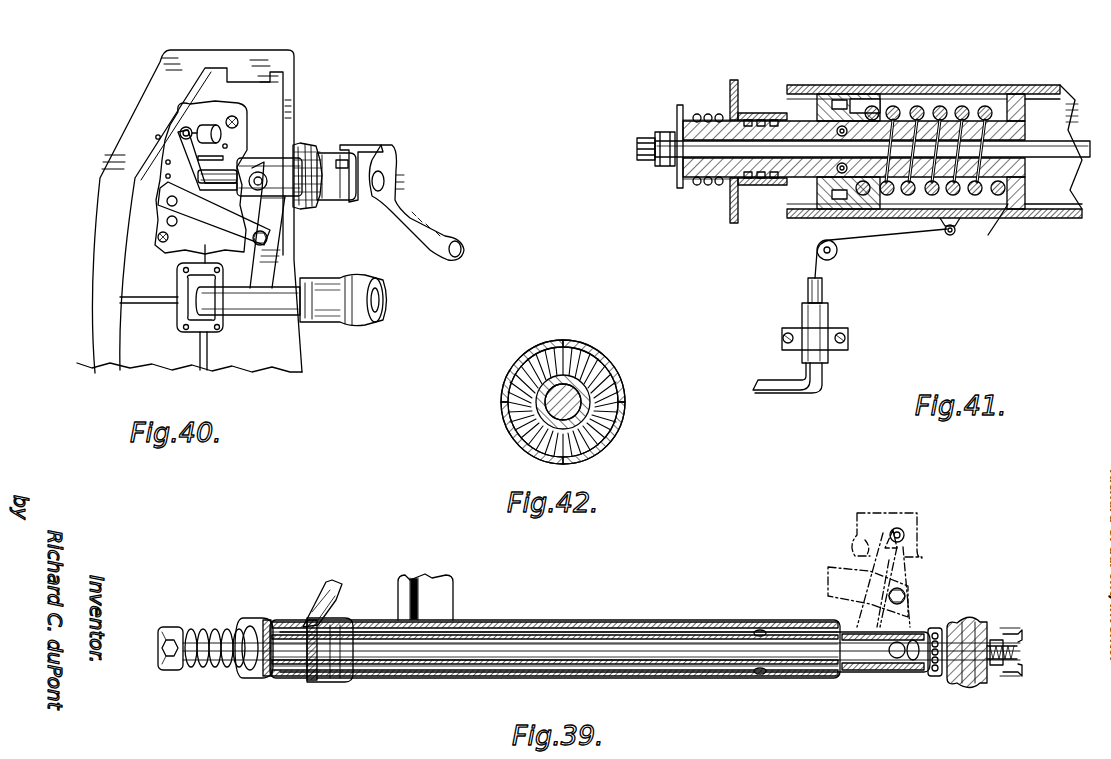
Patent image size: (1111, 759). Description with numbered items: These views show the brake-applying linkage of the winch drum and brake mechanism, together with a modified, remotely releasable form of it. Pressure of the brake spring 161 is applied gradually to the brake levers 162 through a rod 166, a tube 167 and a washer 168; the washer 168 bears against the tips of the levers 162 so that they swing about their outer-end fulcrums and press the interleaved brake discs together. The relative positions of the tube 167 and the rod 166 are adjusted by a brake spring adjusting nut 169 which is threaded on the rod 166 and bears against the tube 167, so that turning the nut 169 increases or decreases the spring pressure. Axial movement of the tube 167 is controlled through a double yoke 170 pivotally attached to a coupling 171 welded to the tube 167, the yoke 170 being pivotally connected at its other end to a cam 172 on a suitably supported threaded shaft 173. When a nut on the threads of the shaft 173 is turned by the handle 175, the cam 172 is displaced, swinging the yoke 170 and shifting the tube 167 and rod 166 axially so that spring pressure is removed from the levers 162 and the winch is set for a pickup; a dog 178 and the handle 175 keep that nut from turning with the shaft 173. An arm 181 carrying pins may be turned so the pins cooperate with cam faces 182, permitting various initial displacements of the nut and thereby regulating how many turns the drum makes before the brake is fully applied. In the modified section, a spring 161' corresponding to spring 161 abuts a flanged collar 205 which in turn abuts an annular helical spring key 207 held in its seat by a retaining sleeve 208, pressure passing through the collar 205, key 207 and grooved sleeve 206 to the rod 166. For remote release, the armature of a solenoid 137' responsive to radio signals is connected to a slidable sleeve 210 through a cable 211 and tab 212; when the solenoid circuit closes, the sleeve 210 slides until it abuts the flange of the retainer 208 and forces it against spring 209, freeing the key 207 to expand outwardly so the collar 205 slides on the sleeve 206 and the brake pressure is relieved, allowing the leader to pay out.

In FIG. 39, the brake spring 161 is at (201, 638).
In FIG. 39, the brake levers 162 is at (320, 598).
In FIG. 41, the rod 166 is at (1090, 140).
In FIG. 39, the rod 166 is at (318, 672).
In FIG. 39, the tube 167 is at (712, 665).
In FIG. 39, the washer 168 is at (338, 680).
In FIG. 40, the brake spring adjusting nut 169 is at (332, 315).
In FIG. 39, the brake spring adjusting nut 169 is at (985, 680).
In FIG. 40, the double yoke 170 is at (300, 250).
In FIG. 39, the double yoke 170 is at (915, 580).
In FIG. 40, the coupling 171 is at (240, 300).
In FIG. 39, the coupling 171 is at (762, 675).
In FIG. 40, the cam 172 is at (282, 150).
In FIG. 39, the cam 172 is at (905, 515).
In FIG. 40, the threaded shaft 173 is at (222, 172).
In FIG. 40, the handle 175 is at (410, 222).
In FIG. 40, the dog 178 is at (346, 146).
In FIG. 40, the arm 181 is at (192, 148).
In FIG. 40, the cam faces 182 is at (232, 182).
In FIG. 41, the flanged collar 205 is at (851, 99).
In FIG. 41, the grooved sleeve 206 is at (716, 178).
In FIG. 42, the grooved sleeve 206 is at (512, 422).
In FIG. 41, the annular helical spring key 207 is at (849, 126).
In FIG. 42, the annular helical spring key 207 is at (590, 418).
In FIG. 41, the retaining sleeve 208 is at (800, 170).
In FIG. 42, the retaining sleeve 208 is at (582, 343).
In FIG. 41, the spring 209 is at (701, 114).
In FIG. 41, the slidable sleeve 210 is at (1025, 90).
In FIG. 41, the cable 211 is at (910, 232).
In FIG. 41, the tab 212 is at (953, 235).
In FIG. 41, the spring 161' is at (1005, 224).
In FIG. 41, the solenoid 137' is at (794, 335).